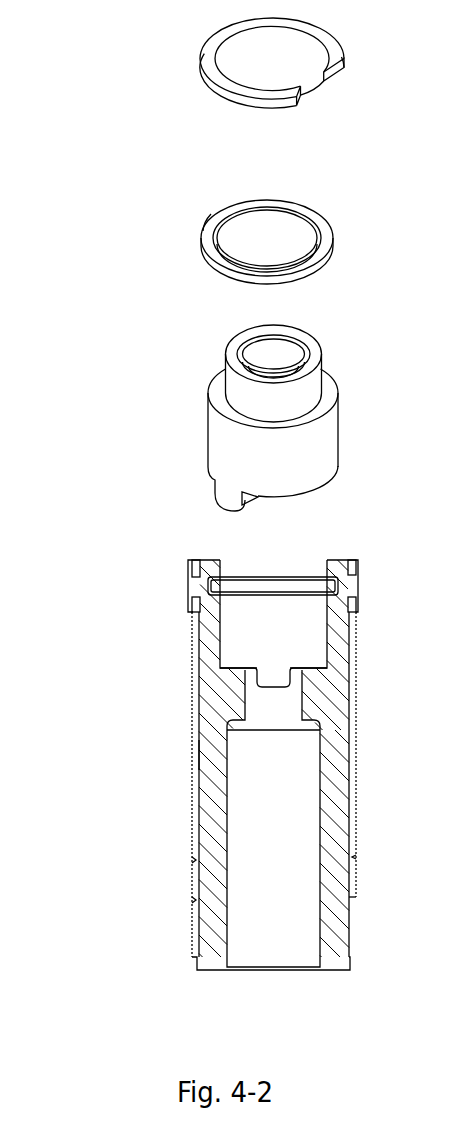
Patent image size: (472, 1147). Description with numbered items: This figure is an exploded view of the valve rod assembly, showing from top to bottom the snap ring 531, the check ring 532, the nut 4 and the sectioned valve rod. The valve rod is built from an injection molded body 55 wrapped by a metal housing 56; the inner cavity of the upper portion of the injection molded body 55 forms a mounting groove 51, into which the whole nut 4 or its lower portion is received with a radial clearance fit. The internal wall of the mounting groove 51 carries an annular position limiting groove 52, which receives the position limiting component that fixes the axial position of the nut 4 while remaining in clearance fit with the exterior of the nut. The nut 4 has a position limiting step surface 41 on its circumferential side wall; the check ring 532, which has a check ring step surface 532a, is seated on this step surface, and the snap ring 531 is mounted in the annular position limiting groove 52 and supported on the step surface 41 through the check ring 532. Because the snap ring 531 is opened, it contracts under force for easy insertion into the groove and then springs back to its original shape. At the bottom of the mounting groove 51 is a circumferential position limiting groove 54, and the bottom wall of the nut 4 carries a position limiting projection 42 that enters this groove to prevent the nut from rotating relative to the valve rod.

The snap ring 531 is at (200, 68).
The check ring 532 is at (205, 256).
The check ring step surface 532a is at (205, 225).
The nut 4 is at (206, 414).
The position limiting step surface 41 is at (220, 397).
The position limiting projection 42 is at (233, 501).
The mounting groove 51 is at (232, 637).
The annular position limiting groove 52 is at (215, 588).
The circumferential position limiting groove 54 is at (270, 678).
The injection molded body 55 is at (217, 828).
The metal housing 56 is at (200, 757).